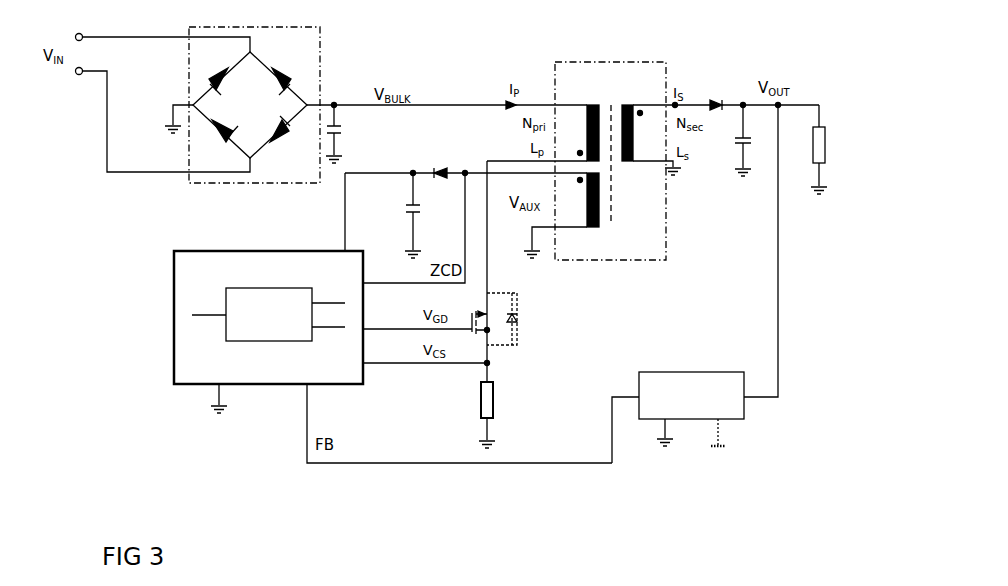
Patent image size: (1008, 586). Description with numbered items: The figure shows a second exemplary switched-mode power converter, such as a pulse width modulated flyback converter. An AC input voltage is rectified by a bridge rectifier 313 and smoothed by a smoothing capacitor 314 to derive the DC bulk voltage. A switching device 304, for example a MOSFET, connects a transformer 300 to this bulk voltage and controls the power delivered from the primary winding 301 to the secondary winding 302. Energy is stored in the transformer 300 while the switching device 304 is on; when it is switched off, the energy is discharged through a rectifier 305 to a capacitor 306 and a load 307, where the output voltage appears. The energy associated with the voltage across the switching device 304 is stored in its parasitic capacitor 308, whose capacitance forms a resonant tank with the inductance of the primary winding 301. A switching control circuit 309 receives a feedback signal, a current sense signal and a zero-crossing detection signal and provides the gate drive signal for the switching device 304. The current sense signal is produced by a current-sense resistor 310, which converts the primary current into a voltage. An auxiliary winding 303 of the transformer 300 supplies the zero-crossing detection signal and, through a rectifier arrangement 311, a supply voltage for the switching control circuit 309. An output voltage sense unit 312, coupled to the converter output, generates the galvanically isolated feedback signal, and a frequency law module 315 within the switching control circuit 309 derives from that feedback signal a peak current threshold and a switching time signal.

The transformer 300 is at (617, 151).
The primary winding 301 is at (588, 123).
The secondary winding 302 is at (666, 130).
The auxiliary winding 303 is at (563, 215).
The switching device 304 is at (468, 327).
The rectifier 305 is at (760, 94).
The capacitor 306 is at (738, 141).
The load 307 is at (837, 149).
The parasitic capacitor 308 is at (521, 319).
The switching control circuit 309 is at (268, 322).
The current-sense resistor 310 is at (506, 405).
The rectifier arrangement 311 is at (456, 204).
The output voltage sense unit 312 is at (678, 408).
The bridge rectifier 313 is at (242, 94).
The smoothing capacitor 314 is at (353, 134).
The frequency law module 315 is at (269, 305).